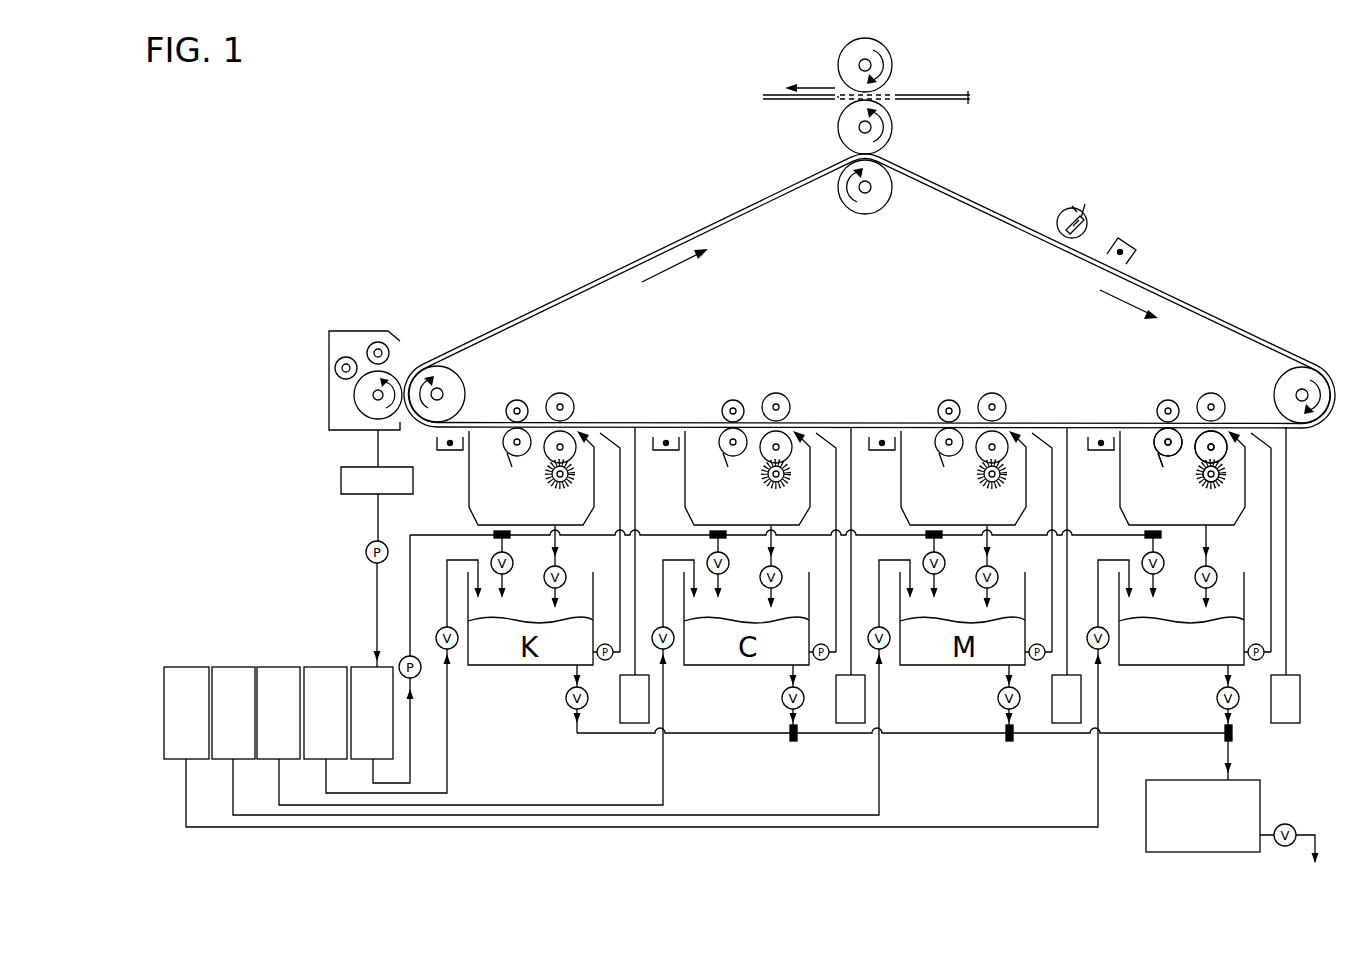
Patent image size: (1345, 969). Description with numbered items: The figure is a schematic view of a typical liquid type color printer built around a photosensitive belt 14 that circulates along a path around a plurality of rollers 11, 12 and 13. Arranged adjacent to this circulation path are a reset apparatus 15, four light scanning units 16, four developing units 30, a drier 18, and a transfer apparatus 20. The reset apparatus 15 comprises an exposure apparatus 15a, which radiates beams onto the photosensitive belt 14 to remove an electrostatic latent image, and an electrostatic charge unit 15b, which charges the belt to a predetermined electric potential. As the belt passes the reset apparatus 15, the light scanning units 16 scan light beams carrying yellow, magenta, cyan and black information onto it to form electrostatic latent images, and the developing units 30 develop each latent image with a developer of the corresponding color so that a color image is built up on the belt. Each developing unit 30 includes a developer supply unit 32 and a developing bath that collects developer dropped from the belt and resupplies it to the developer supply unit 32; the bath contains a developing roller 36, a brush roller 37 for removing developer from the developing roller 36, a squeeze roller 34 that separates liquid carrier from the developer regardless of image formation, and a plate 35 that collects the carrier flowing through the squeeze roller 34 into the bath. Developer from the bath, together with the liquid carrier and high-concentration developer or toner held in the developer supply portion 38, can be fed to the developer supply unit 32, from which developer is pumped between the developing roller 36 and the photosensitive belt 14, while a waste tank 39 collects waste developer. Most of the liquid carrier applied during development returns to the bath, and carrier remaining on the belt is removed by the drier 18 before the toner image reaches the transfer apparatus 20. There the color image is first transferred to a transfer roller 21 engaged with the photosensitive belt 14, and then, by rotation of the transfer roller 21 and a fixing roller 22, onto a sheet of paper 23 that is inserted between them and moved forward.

The roller 11 is at (443, 382).
The roller 12 is at (875, 200).
The roller 13 is at (1306, 372).
The photosensitive belt 14 is at (960, 196).
The reset apparatus 15 is at (1128, 215).
The exposure apparatus 15a is at (1086, 212).
The electrostatic charge unit 15b is at (1126, 240).
The light scanning unit 16 is at (633, 723).
The drier 18 is at (329, 378).
The transfer apparatus 20 is at (752, 66).
The transfer roller 21 is at (845, 134).
The fixing roller 22 is at (840, 57).
The sheet of paper 23 is at (961, 95).
The developing unit 30 is at (454, 493).
The developer supply unit 32 is at (1182, 665).
The squeeze roller 34 is at (1160, 430).
The plate 35 is at (1160, 456).
The developing roller 36 is at (1224, 431).
The brush roller 37 is at (1228, 472).
The developer supply portion 38 is at (357, 660).
The waste tank 39 is at (1146, 830).